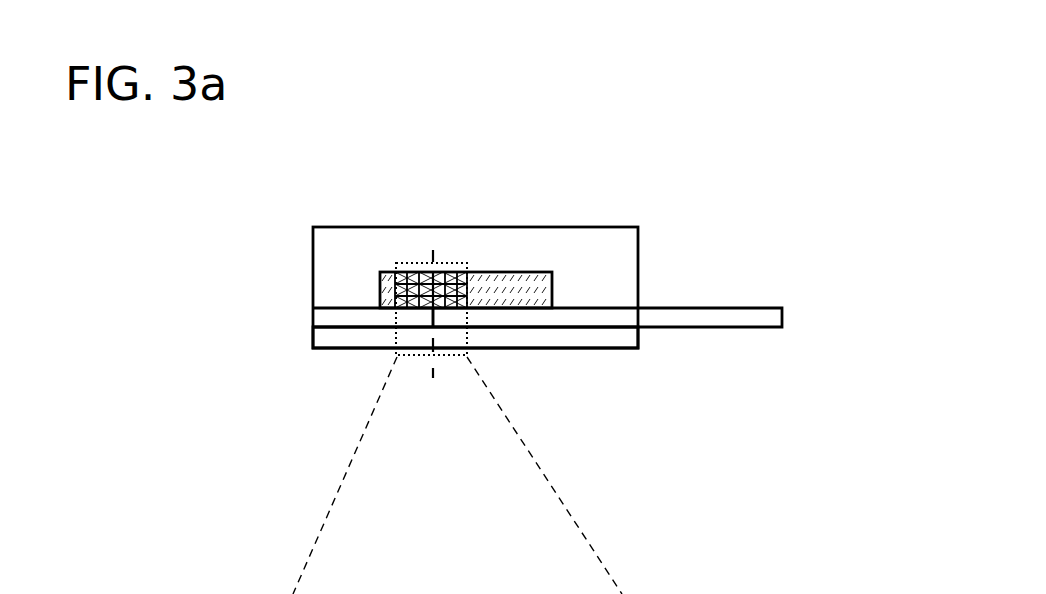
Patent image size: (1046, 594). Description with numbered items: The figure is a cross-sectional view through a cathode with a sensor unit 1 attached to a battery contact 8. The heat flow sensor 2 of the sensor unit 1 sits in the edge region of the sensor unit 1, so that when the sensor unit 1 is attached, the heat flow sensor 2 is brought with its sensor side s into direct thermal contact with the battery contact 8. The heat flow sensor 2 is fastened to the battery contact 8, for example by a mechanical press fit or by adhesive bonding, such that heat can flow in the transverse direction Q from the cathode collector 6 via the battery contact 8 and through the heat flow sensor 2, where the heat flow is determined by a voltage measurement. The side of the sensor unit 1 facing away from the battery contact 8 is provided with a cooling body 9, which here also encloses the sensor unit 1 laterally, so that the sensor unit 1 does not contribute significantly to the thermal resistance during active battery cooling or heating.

The sensor unit 1 is at (488, 283).
The heat flow sensor 2 is at (395, 297).
The cathode collector 6 is at (503, 338).
The battery contact 8 is at (772, 319).
The cooling body 9 is at (356, 291).
The transverse direction Q is at (457, 422).
The sensor side s is at (408, 313).